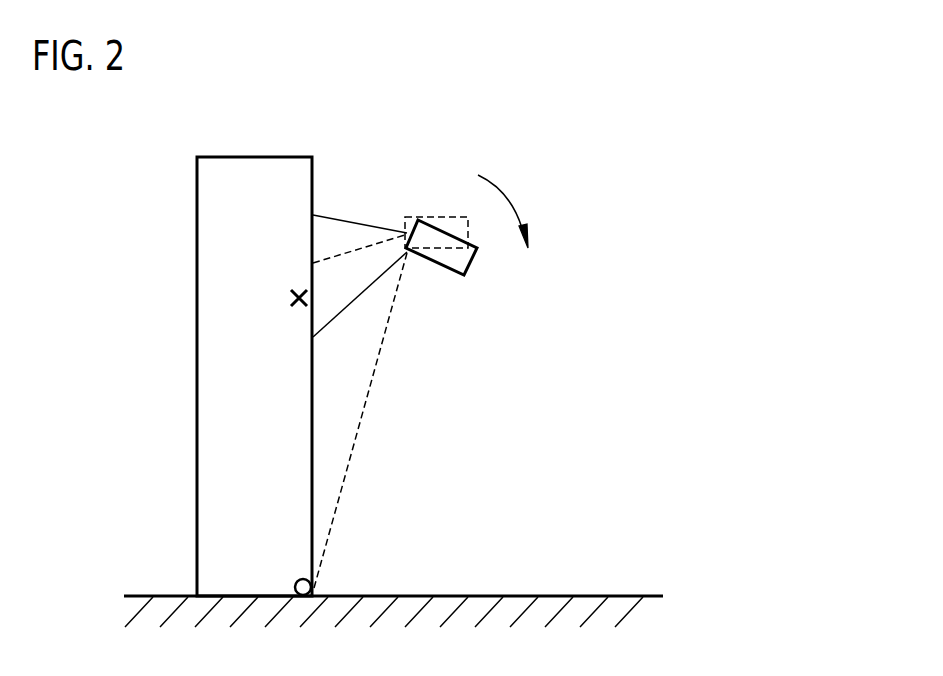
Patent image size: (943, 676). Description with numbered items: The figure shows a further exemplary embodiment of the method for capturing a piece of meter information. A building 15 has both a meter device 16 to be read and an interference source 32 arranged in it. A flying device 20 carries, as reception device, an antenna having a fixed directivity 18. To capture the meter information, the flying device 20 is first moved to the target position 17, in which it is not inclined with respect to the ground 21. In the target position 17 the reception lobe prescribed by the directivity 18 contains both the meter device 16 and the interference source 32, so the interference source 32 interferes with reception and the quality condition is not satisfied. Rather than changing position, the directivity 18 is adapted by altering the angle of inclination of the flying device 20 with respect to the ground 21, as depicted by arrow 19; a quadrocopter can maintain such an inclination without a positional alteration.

The building 15 is at (197, 293).
The meter device 16 is at (302, 290).
The target position 17 is at (458, 221).
The directivity 18 is at (326, 229).
The arrow 19 is at (513, 192).
The flying device 20 is at (452, 262).
The ground 21 is at (529, 593).
The interference source 32 is at (297, 578).